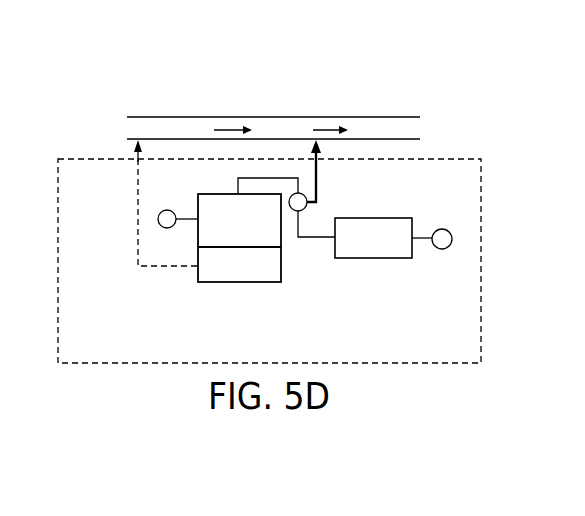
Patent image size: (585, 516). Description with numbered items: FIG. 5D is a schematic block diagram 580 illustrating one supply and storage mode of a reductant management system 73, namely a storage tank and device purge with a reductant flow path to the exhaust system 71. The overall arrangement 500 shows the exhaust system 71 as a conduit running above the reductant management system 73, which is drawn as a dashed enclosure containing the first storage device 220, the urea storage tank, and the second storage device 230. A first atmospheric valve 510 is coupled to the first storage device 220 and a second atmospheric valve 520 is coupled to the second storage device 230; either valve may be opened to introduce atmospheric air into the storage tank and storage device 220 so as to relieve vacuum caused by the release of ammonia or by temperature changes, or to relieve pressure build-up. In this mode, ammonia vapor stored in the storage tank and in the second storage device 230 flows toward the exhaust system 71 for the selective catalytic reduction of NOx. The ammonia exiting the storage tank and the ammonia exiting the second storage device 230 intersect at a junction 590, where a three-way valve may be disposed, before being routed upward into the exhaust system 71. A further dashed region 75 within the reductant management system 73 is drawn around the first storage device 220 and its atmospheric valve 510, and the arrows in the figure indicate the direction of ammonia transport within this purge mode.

The system 500 is at (424, 55).
The diagram 580 is at (455, 108).
The exhaust system 71 is at (214, 117).
The reductant management system 73 is at (485, 256).
The sub-enclosure 75 is at (132, 246).
The first storage device 220 is at (238, 293).
The second storage device 230 is at (375, 258).
The first atmospheric valve 510 is at (170, 209).
The second atmospheric valve 520 is at (444, 229).
The junction 590 is at (308, 206).